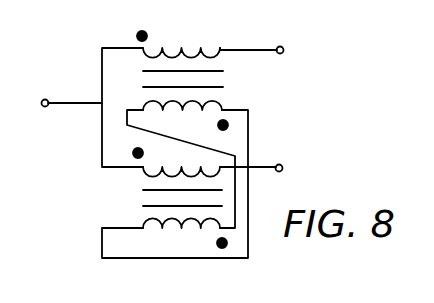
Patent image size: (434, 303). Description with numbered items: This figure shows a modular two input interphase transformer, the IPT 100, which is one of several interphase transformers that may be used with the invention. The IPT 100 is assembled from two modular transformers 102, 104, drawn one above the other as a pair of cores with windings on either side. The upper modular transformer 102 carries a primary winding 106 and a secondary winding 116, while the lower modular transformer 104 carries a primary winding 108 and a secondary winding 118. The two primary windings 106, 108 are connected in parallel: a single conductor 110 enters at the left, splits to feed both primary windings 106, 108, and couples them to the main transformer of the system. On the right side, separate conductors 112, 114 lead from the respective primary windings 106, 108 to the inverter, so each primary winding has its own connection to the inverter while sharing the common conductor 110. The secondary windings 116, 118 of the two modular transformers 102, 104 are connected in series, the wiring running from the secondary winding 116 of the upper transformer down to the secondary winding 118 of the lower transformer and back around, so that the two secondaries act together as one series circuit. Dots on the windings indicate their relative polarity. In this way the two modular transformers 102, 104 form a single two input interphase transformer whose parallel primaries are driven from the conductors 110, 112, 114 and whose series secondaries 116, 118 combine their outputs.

The modular two input IPT 100 is at (321, 89).
The modular transformer 102 is at (224, 80).
The modular transformer 104 is at (133, 200).
The primary winding 106 is at (167, 53).
The primary winding 108 is at (144, 170).
The conductor 110 is at (80, 100).
The conductor 112 is at (252, 49).
The conductor 114 is at (262, 166).
The secondary winding 116 is at (223, 108).
The secondary winding 118 is at (180, 228).